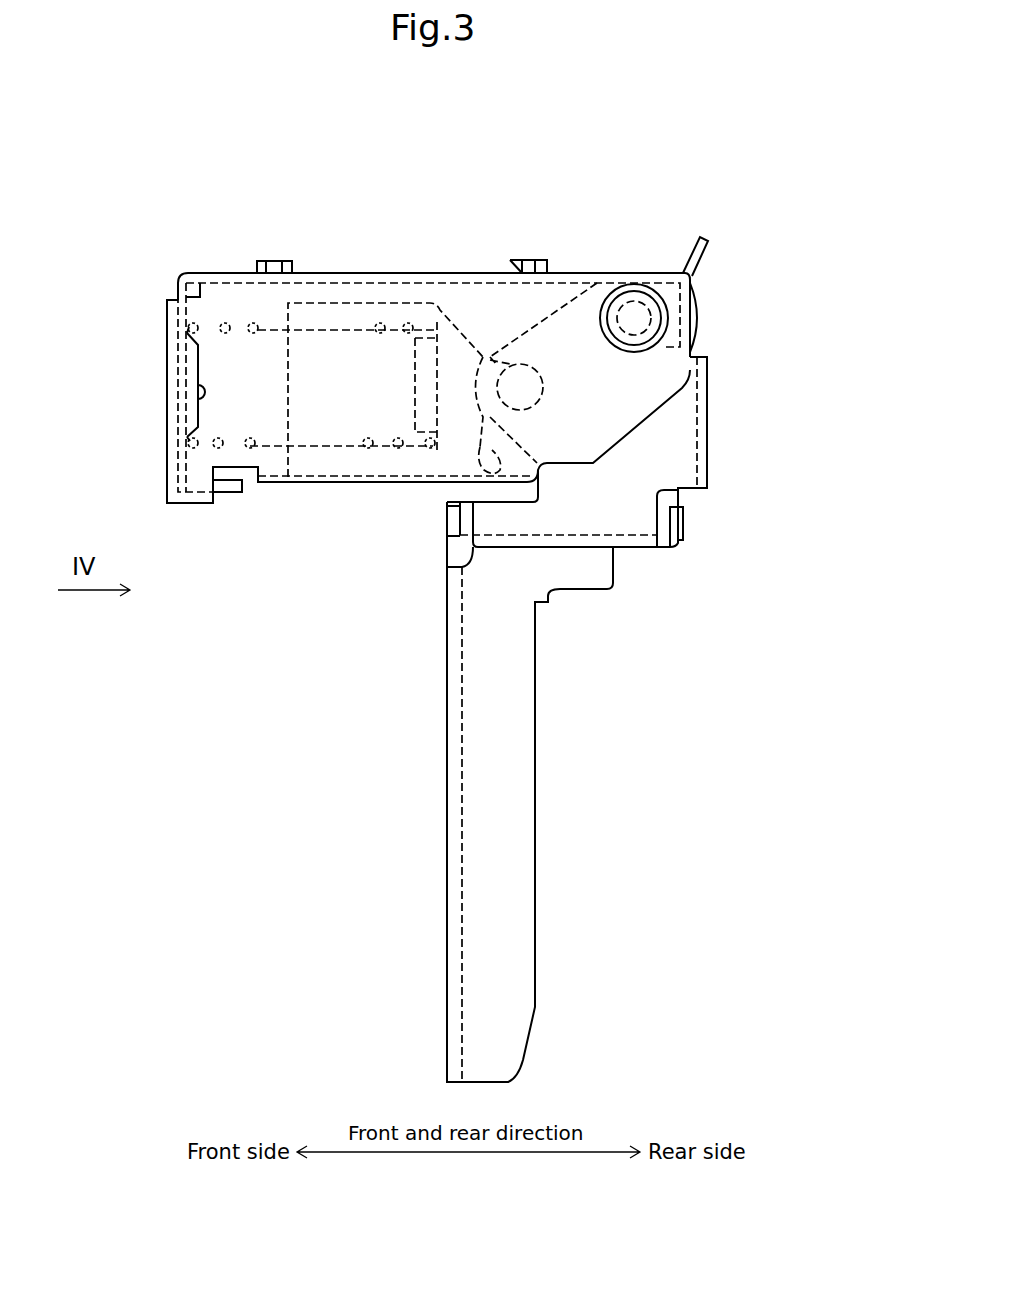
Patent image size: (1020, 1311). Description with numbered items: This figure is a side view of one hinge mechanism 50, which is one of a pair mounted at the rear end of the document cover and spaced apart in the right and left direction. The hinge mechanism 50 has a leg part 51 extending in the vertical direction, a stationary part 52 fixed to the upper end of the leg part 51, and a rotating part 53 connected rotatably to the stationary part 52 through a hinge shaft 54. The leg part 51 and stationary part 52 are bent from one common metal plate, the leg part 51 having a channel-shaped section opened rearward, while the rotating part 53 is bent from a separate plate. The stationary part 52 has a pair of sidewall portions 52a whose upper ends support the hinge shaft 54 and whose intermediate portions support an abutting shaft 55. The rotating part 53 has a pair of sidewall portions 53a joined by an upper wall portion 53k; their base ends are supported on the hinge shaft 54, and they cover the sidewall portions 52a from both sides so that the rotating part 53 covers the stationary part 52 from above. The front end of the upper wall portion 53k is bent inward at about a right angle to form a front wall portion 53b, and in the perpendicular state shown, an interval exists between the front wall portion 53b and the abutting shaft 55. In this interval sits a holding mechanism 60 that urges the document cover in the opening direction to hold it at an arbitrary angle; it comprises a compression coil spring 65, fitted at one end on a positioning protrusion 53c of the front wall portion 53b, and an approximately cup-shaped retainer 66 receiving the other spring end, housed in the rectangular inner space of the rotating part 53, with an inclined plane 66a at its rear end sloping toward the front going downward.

The hinge mechanism 50 is at (118, 255).
The leg part 51 is at (535, 762).
The stationary part 52 is at (708, 405).
The sidewall portion 52a is at (657, 447).
The rotating part 53 is at (398, 273).
The sidewall portion 53a is at (240, 308).
The front wall portion 53b is at (180, 347).
The positioning protrusion 53c is at (197, 393).
The upper wall portion 53k is at (373, 273).
The hinge shaft 54 is at (632, 302).
The abutting shaft 55 is at (527, 364).
The holding mechanism 60 is at (480, 327).
The compression coil spring 65 is at (262, 324).
The retainer 66 is at (420, 302).
The inclined plane 66a is at (480, 473).